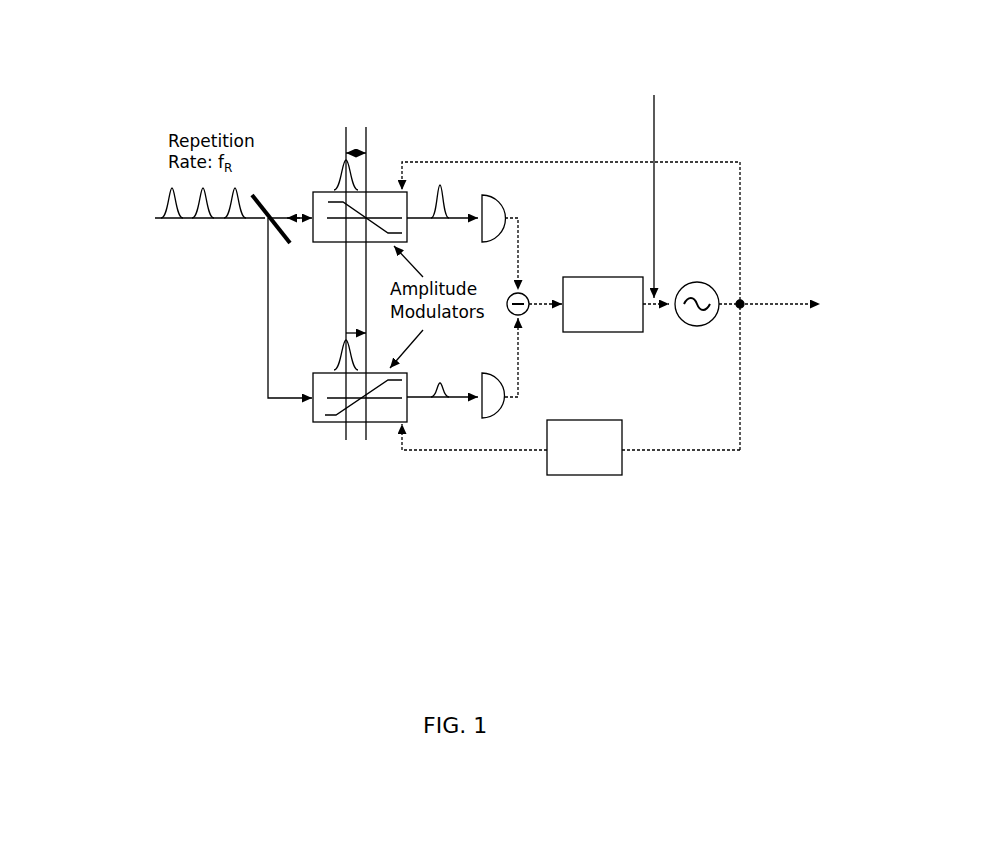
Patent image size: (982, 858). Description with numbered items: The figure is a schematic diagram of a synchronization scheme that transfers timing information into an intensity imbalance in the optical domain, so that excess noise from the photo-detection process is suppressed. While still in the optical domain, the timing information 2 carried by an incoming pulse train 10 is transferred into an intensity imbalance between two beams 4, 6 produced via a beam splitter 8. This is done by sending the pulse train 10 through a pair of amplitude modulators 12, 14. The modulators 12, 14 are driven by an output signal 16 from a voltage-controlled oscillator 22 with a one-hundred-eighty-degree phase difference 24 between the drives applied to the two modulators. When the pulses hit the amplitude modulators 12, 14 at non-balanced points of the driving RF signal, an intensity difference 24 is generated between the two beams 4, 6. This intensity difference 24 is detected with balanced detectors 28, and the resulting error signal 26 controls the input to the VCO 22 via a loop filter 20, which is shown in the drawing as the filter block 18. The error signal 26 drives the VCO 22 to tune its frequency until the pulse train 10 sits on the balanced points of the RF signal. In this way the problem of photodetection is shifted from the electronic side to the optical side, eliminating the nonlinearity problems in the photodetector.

The timing information 2 is at (160, 208).
The beam 4 is at (289, 215).
The beam 6 is at (266, 346).
The beam splitter 8 is at (264, 222).
The pulse train 10 is at (348, 158).
The amplitude modulator 12 is at (326, 188).
The amplitude modulator 14 is at (316, 421).
The output signal 16 is at (771, 288).
The loop filter 18 is at (608, 274).
The loop filter 20 is at (546, 474).
The voltage-controlled oscillator 22 is at (688, 279).
The intensity difference 24 is at (526, 291).
The error signal 26 is at (654, 181).
The balanced detectors 28 is at (490, 193).